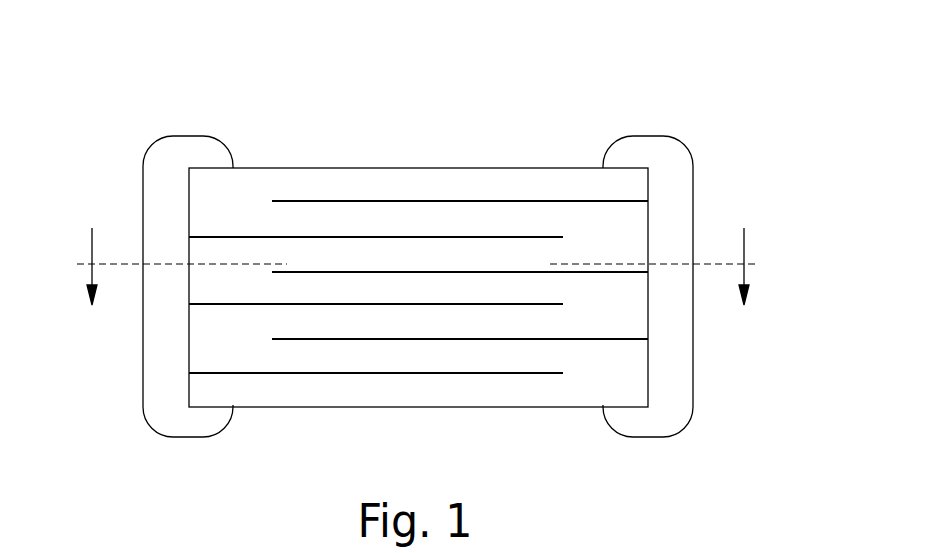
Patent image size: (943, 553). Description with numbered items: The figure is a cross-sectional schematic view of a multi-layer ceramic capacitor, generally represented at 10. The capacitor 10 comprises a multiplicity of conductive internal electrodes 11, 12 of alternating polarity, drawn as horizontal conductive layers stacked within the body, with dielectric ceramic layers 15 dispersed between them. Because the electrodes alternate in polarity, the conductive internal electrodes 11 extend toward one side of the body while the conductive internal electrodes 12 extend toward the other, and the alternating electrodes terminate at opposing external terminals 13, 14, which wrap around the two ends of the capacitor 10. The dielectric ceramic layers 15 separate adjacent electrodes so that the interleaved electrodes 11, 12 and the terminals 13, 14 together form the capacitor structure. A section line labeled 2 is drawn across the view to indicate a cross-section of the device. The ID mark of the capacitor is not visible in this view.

The capacitor 10 is at (415, 218).
The conductive internal electrode 11 is at (520, 199).
The conductive internal electrode 12 is at (359, 235).
The external terminal 13 is at (667, 363).
The external terminal 14 is at (172, 348).
The dielectric ceramic layer 15 is at (237, 197).
The section line 2- 2 is at (418, 266).